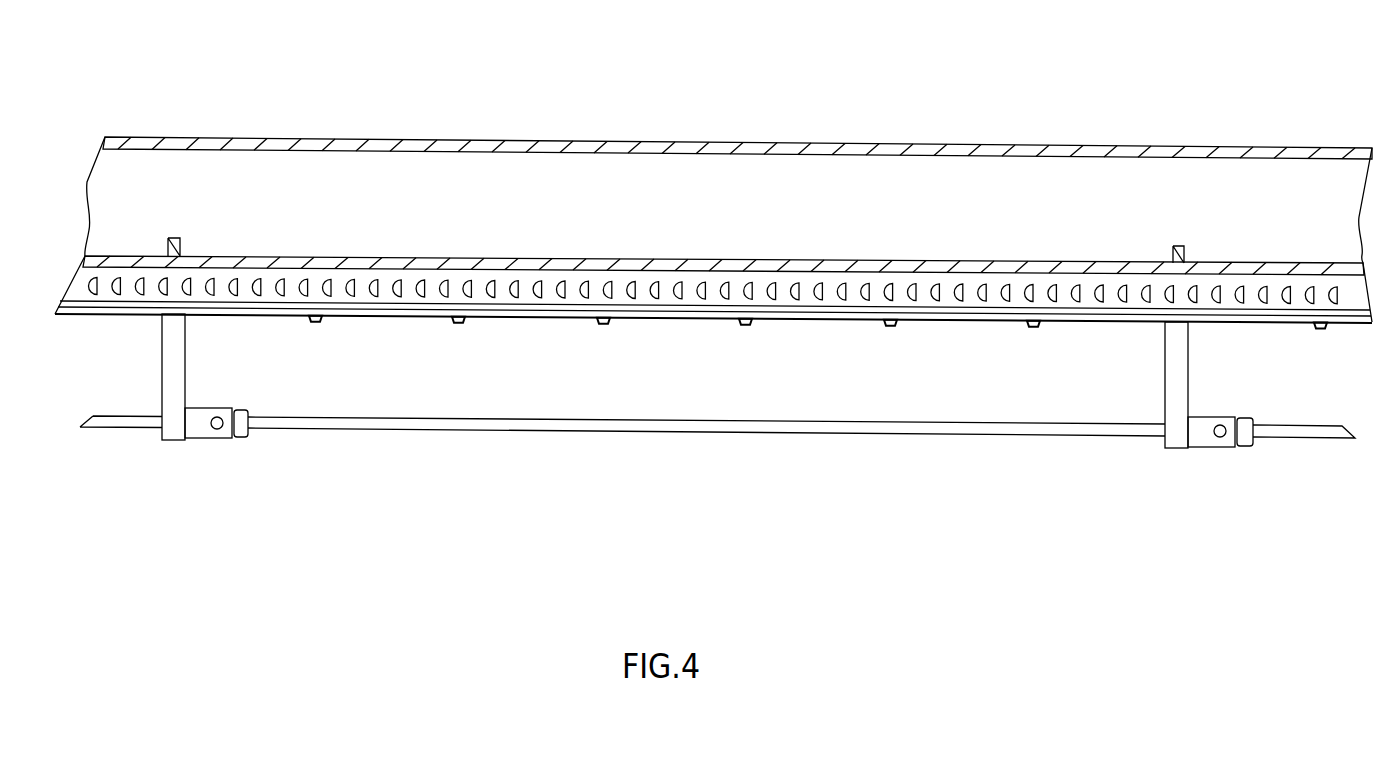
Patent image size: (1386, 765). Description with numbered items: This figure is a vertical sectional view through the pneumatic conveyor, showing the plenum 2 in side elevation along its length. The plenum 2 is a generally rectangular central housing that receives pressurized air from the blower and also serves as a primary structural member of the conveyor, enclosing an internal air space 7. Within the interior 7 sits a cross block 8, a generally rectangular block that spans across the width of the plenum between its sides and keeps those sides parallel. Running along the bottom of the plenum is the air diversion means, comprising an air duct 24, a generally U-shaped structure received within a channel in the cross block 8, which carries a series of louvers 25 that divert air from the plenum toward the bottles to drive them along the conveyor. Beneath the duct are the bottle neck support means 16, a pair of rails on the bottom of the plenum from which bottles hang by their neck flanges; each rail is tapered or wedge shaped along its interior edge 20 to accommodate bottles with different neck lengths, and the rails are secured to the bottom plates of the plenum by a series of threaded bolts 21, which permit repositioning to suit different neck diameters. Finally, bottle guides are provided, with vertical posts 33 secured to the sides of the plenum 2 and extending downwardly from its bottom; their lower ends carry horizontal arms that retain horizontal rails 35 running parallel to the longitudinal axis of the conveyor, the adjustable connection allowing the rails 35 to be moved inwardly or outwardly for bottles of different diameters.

The plenum 2 is at (1210, 145).
The internal air space 7 is at (710, 221).
The cross block 8 is at (1175, 248).
The bottle neck support means 16 is at (818, 315).
The interior edge 20 is at (1190, 312).
The threaded bolts 21 is at (1035, 325).
The air duct 24 is at (758, 262).
The louvers 25 is at (528, 287).
The vertical posts 33 is at (1177, 400).
The horizontal rails 35 is at (763, 432).